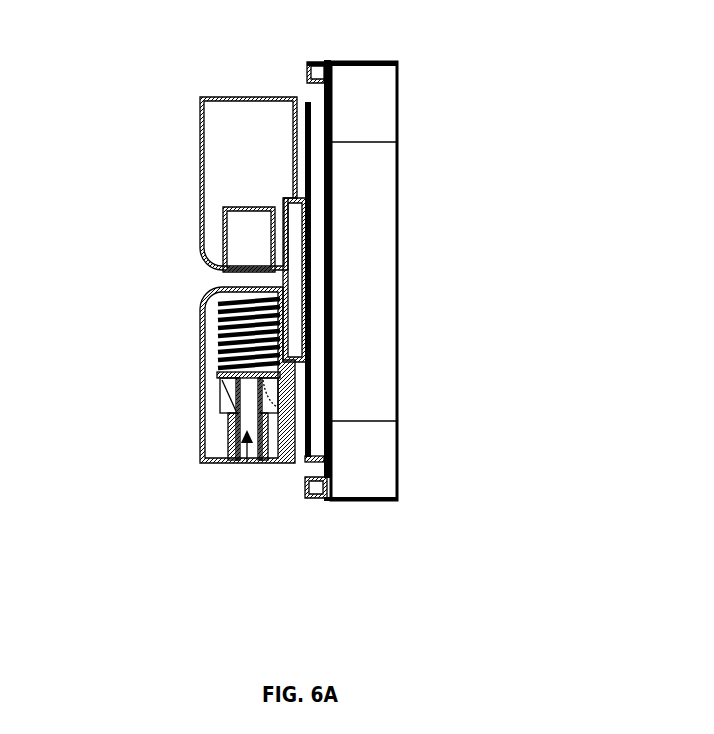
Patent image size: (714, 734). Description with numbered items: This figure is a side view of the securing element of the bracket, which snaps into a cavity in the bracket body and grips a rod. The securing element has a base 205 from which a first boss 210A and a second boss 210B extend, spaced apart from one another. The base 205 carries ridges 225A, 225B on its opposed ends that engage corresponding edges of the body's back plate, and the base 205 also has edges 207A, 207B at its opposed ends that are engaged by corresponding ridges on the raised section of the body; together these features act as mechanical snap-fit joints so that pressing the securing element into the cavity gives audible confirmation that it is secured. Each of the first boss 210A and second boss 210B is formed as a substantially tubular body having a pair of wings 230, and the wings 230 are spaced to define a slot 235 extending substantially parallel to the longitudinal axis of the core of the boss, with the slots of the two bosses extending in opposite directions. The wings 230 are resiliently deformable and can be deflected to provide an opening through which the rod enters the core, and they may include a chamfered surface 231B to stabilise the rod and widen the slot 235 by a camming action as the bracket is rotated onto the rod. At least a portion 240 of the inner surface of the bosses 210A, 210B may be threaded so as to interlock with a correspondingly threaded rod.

The base 205 is at (394, 255).
The edge of the base 207A is at (397, 63).
The edge of the base 207B is at (396, 499).
The ridge 225A is at (324, 58).
The ridge 225B is at (318, 497).
The first boss 210A is at (200, 128).
The second boss 210B is at (200, 422).
The threaded portion of the inner surface 240 is at (214, 308).
The chamfered surface 231B is at (265, 405).
The wings 230 is at (229, 448).
The slot 235 is at (247, 460).